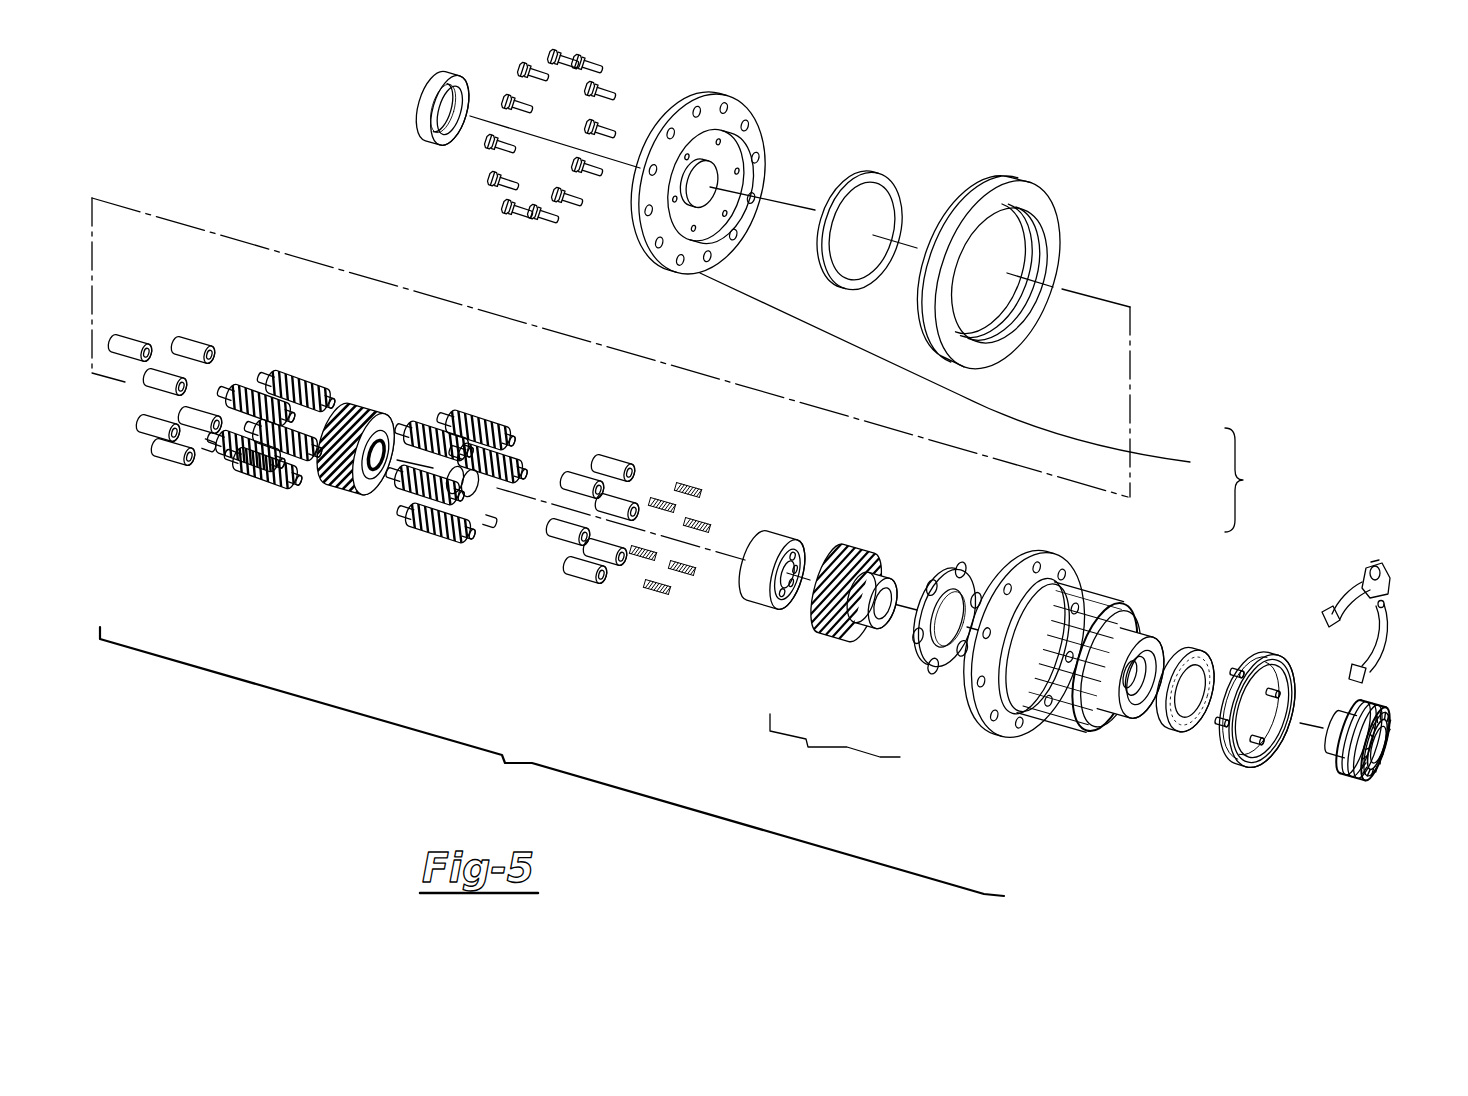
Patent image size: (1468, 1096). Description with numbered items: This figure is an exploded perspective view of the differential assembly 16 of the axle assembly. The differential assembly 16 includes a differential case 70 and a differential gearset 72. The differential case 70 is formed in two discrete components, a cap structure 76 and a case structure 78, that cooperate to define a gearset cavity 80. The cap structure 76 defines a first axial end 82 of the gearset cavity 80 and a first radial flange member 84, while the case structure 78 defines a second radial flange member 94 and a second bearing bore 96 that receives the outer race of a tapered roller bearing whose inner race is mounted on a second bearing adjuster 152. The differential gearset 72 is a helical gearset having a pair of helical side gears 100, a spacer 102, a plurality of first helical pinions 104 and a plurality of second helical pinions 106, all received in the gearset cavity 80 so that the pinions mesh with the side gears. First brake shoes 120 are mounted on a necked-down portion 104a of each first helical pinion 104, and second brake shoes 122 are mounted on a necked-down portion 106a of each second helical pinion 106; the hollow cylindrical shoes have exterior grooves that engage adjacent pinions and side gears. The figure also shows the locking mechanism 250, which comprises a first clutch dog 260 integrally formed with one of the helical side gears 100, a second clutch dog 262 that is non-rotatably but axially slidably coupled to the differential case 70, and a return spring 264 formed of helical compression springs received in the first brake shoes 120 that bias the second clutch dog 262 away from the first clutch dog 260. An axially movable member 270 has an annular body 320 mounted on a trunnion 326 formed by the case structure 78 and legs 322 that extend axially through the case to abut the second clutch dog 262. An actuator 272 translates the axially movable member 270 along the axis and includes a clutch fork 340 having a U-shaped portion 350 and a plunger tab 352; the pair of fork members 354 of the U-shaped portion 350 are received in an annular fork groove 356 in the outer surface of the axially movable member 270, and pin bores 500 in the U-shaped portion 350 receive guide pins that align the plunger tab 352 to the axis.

The differential assembly 16 is at (268, 790).
The differential case 70 is at (983, 344).
The differential gearset 72 is at (508, 468).
The cap structure 76 is at (958, 374).
The case structure 78 is at (1108, 585).
The gearset cavity 80 is at (1091, 616).
The first axial end 82 is at (718, 158).
The first radial flange member 84 is at (714, 188).
The second radial flange member 94 is at (1035, 560).
The second bearing bore 96 is at (1150, 648).
The helical side gear 100 is at (348, 485).
The spacer 102 is at (763, 540).
The first helical pinion 104 is at (448, 420).
The necked-down portion 104a is at (492, 526).
The second helical pinion 106 is at (298, 395).
The necked-down portion 106a is at (213, 450).
The first brake shoe 120 is at (605, 460).
The second brake shoe 122 is at (190, 346).
The second bearing adjuster 152 is at (1388, 780).
The locking mechanism 250 is at (861, 625).
The first clutch dog 260 is at (872, 645).
The second clutch dog 262 is at (914, 652).
The return spring 264 is at (708, 487).
The axially movable member 270 is at (1237, 749).
The actuator 272 is at (1355, 598).
The body 320 is at (1280, 748).
The legs 322 is at (1222, 727).
The trunnion 326 is at (1106, 727).
The clutch fork 340 is at (1380, 620).
The U-shaped portion 350 is at (1338, 600).
The plunger tab 352 is at (1376, 562).
The fork members 354 is at (1326, 618).
The annular fork groove 356 is at (1243, 752).
The pin bore 500 is at (1385, 604).